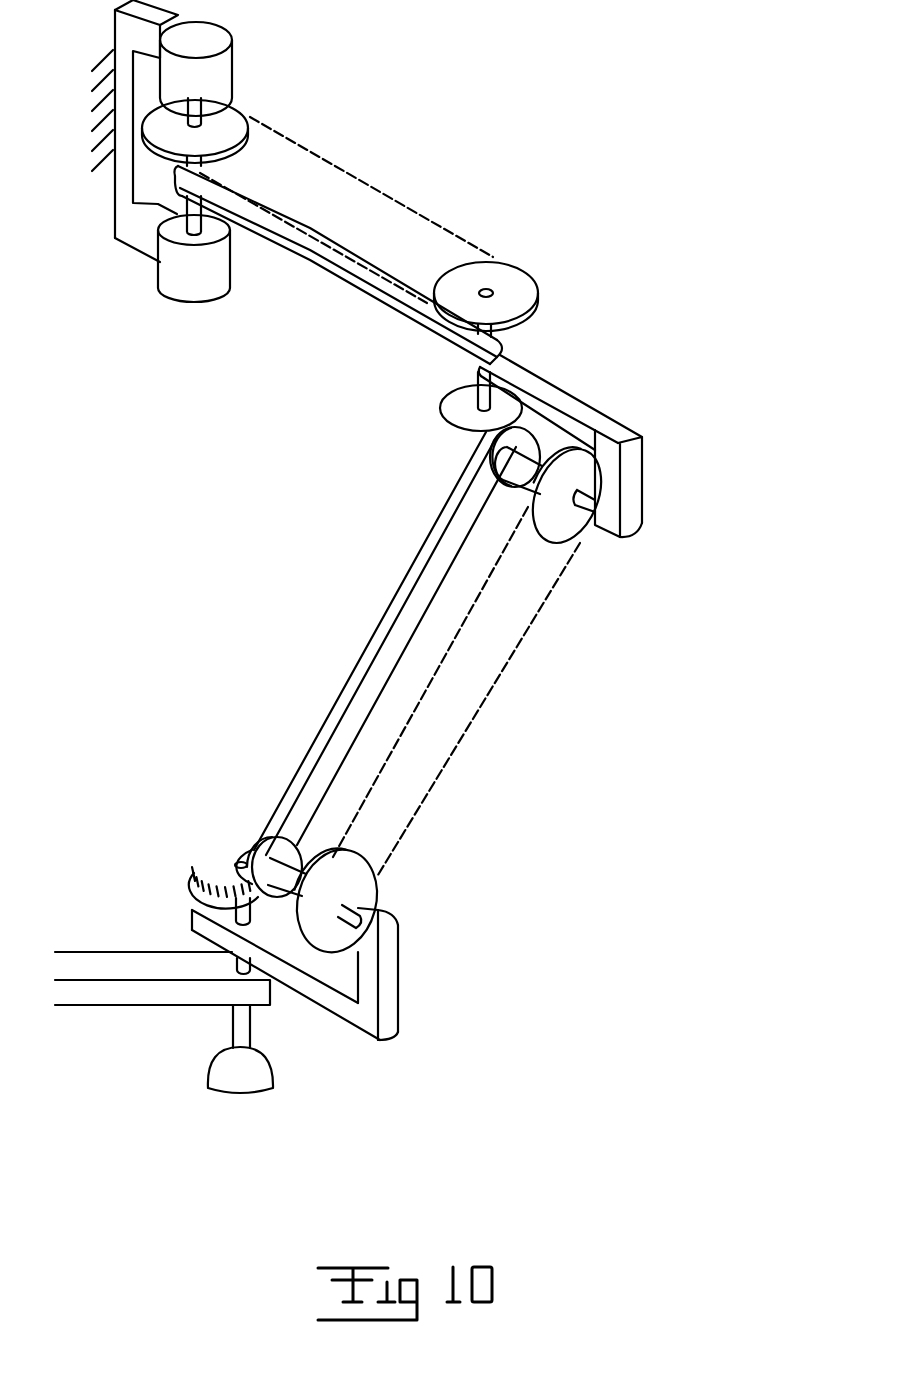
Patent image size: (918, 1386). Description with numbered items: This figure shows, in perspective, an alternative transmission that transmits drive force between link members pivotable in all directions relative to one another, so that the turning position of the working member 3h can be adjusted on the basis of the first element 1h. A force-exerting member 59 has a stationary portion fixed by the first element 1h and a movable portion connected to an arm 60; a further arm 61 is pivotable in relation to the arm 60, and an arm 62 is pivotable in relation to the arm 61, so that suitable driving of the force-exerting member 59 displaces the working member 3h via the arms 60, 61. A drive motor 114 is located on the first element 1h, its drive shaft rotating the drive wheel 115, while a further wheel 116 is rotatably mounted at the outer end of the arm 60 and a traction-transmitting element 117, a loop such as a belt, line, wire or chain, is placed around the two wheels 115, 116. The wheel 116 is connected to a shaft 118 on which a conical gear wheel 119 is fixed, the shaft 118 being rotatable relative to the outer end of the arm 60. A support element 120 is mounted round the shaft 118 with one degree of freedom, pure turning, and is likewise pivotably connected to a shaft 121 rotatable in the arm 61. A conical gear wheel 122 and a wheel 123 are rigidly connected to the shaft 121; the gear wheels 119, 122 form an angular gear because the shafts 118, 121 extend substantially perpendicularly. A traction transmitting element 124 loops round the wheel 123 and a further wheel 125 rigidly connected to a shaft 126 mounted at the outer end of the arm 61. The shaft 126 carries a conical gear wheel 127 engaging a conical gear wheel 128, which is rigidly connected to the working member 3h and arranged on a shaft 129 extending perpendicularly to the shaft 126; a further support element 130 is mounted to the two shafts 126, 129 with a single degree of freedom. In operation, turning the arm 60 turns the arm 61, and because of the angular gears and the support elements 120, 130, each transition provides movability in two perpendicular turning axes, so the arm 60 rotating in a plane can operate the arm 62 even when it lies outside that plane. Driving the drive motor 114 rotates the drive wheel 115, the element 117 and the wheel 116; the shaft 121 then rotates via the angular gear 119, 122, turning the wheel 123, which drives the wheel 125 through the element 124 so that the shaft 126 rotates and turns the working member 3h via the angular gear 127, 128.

The first element 1h is at (105, 158).
The drive motor 114 is at (212, 72).
The drive wheel 115 is at (230, 128).
The force-exerting member 59 is at (200, 283).
The arm 60 is at (357, 278).
The traction-transmitting element 117 is at (397, 200).
The further wheel 116 is at (513, 283).
The shaft 118 is at (478, 393).
The conical gear wheel 119 is at (455, 420).
The support element 120 is at (588, 412).
The shaft 121 is at (540, 468).
The conical gear wheel 122 is at (497, 467).
The wheel 123 is at (573, 520).
The arm 61 is at (370, 663).
The traction transmitting element 124 is at (513, 658).
The further wheel 125 is at (360, 887).
The shaft 126 is at (290, 868).
The conical gear wheel 127 is at (280, 857).
The conical gear wheel 128 is at (220, 863).
The shaft 129 is at (237, 915).
The further support element 130 is at (388, 975).
The arm 62 is at (142, 963).
The working member 3h is at (258, 1058).